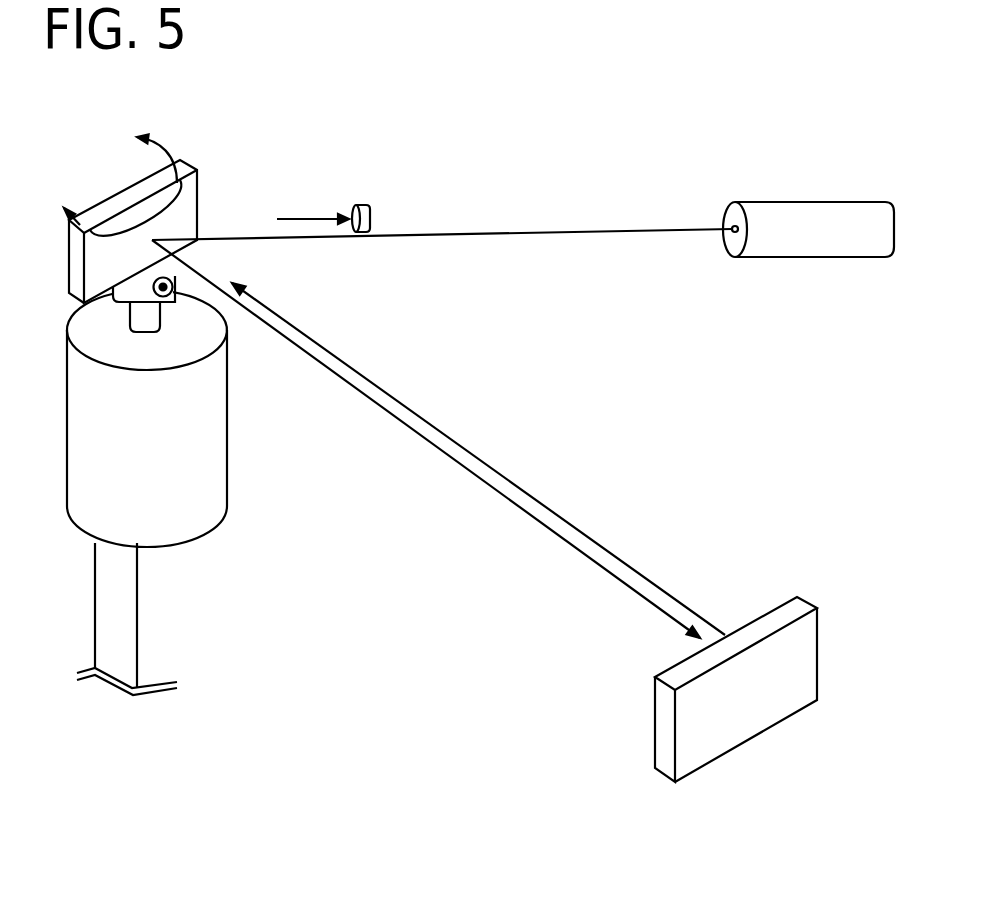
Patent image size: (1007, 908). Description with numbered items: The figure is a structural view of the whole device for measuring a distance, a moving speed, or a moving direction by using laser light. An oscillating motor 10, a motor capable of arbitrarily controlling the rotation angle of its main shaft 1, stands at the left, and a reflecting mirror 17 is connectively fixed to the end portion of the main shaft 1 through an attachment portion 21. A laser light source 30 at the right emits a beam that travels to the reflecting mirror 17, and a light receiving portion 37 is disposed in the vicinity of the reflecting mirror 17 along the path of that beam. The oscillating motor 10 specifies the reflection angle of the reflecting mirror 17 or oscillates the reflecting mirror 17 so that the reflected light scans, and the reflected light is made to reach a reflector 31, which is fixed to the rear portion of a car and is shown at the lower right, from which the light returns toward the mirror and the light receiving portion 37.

The main shaft 1 is at (160, 315).
The oscillating motor 10 is at (227, 465).
The reflecting mirror 17 is at (198, 208).
The attachment portion 21 is at (140, 275).
The laser light source 30 is at (790, 247).
The reflector 31 is at (800, 597).
The light receiving portion 37 is at (367, 203).